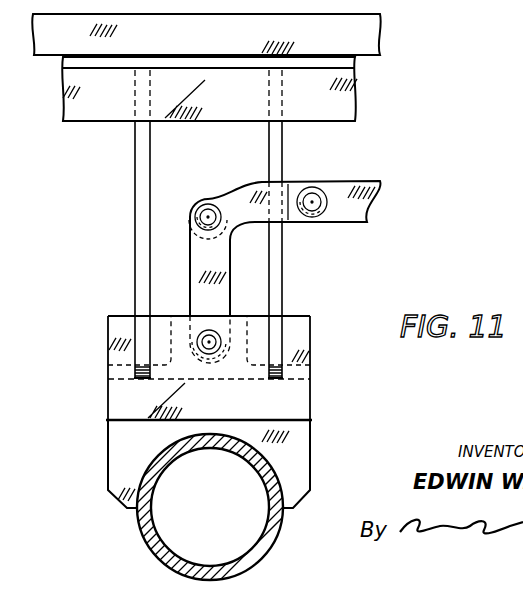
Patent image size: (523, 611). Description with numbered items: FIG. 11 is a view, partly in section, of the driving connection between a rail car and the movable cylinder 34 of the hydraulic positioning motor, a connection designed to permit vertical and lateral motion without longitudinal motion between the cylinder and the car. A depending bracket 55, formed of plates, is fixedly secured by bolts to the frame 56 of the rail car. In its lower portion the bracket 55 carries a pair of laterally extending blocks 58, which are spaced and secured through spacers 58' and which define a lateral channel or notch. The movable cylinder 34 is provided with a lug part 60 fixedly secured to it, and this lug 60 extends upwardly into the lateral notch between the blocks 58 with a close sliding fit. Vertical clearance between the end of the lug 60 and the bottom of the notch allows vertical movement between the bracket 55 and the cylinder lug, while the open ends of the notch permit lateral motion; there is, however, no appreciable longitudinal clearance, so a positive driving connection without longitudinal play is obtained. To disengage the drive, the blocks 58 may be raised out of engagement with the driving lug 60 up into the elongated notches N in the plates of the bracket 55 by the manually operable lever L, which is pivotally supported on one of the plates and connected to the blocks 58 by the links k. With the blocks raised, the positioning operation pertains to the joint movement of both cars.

The frame 56 is at (372, 40).
The depending bracket 55 is at (277, 162).
The links k is at (197, 250).
The elongated notches N is at (140, 287).
The manually operable lever L is at (350, 208).
The spacers 58' is at (207, 336).
The blocks 58 is at (175, 396).
The lug part 60 is at (297, 448).
The movable cylinder 34 is at (140, 528).